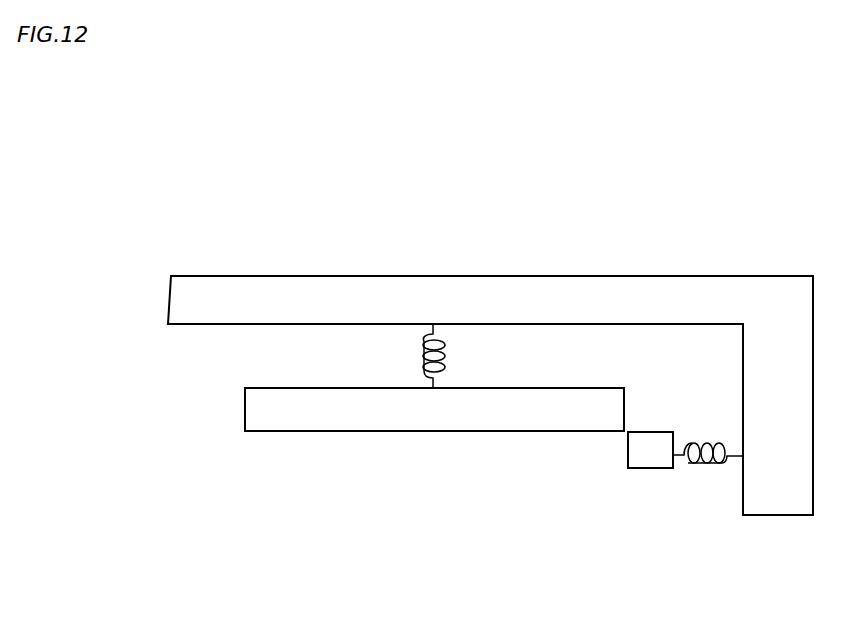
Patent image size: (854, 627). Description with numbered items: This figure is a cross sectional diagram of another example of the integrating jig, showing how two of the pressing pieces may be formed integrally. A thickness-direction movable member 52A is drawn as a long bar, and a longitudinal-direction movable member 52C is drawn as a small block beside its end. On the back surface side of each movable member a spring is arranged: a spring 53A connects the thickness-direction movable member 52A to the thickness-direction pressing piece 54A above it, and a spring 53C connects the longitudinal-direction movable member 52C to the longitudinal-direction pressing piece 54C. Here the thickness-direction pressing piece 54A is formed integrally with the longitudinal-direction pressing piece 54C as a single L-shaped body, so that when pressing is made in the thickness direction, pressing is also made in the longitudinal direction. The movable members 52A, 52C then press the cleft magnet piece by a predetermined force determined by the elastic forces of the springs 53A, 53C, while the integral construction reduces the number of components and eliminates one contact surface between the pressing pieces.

The thickness-direction pressing piece 54A is at (372, 292).
The longitudinal-direction pressing piece 54C is at (775, 493).
The thickness-direction movable member 52A is at (303, 406).
The spring 53A is at (418, 353).
The longitudinal-direction movable member 52C is at (649, 445).
The spring 53C is at (715, 463).